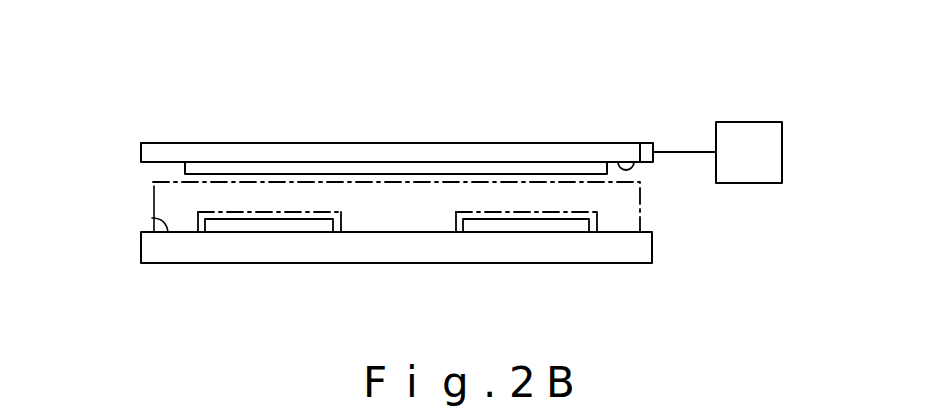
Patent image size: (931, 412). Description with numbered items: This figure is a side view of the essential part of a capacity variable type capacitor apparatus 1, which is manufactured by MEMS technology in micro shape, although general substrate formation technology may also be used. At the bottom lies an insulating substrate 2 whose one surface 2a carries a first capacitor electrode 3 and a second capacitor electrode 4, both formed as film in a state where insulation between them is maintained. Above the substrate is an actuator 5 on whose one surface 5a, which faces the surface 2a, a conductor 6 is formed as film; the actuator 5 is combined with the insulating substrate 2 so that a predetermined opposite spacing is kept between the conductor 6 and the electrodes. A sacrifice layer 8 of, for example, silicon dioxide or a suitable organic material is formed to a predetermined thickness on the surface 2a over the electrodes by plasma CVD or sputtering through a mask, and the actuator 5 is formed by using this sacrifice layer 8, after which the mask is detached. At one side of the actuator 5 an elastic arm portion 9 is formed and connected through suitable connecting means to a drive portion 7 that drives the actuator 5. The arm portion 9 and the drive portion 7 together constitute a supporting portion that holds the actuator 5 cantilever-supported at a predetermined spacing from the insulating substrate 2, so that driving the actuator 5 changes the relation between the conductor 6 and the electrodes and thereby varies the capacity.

The capacitor apparatus 1 is at (470, 118).
The insulating substrate 2 is at (185, 253).
The one surface of insulating substrate 2a is at (152, 218).
The first capacitor electrode 3 is at (265, 225).
The second capacitor electrode 4 is at (523, 225).
The actuator 5 is at (280, 148).
The one surface of actuator 5a is at (639, 143).
The conductor 6 is at (377, 168).
The drive portion 7 is at (748, 122).
The sacrifice layer 8 is at (150, 190).
The arm portion 9 is at (684, 153).